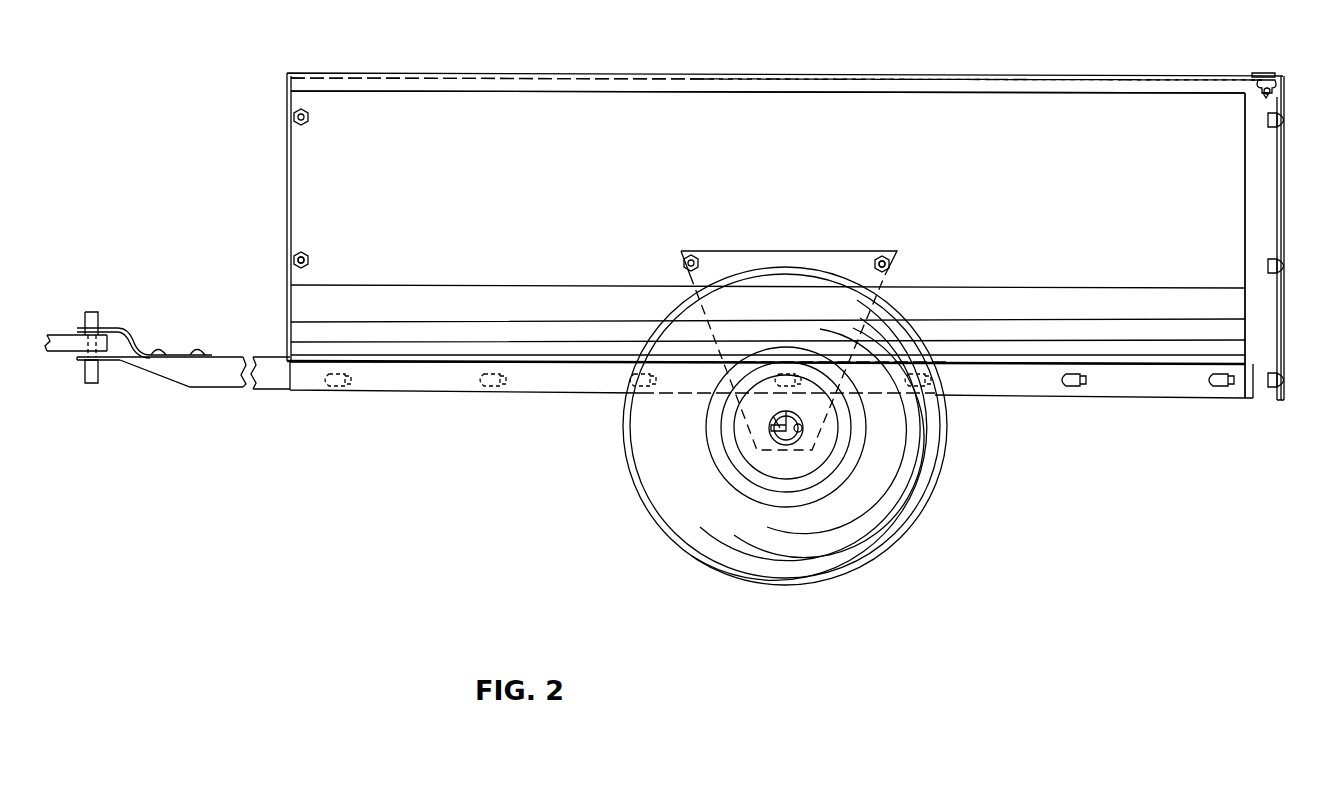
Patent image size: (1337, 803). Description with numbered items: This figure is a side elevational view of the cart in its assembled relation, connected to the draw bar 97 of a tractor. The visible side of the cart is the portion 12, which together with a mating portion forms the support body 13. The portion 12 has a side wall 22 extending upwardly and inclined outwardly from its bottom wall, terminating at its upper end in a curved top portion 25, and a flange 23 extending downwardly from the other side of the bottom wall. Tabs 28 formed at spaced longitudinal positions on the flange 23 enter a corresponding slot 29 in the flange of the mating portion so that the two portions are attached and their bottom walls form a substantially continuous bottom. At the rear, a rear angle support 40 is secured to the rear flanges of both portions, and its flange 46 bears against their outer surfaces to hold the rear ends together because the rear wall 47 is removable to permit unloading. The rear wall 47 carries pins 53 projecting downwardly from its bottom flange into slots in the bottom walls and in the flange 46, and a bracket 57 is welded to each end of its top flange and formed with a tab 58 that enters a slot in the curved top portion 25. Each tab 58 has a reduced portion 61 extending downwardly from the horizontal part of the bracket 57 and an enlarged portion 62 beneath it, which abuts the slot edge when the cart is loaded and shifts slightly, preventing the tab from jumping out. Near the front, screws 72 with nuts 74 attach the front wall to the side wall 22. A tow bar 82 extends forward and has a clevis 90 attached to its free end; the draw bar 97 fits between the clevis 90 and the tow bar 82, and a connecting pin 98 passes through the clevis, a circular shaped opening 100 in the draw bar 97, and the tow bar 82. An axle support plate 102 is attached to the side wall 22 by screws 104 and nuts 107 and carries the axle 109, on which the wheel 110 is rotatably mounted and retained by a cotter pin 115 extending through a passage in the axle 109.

The portion 12 is at (356, 74).
The support body 13 is at (900, 75).
The side wall 22 is at (1100, 216).
The flange 23 is at (1000, 398).
The curved top portion 25 is at (1150, 95).
The tabs 28 is at (1080, 390).
The slot 29 is at (1088, 381).
The rear angle support 40 is at (1236, 251).
The flange 46 is at (1246, 207).
The rear wall 47 is at (1293, 232).
The pins 53 is at (1258, 398).
The bracket 57 is at (1268, 72).
The tab 58 is at (1282, 93).
The reduced portion 61 is at (1282, 78).
The enlarged portion 62 is at (1265, 95).
The screws 72 is at (308, 264).
The nuts 74 is at (308, 257).
The tow bar 82 is at (241, 348).
The clevis 90 is at (130, 332).
The draw bar 97 is at (70, 334).
The connecting pin 98 is at (97, 320).
The circular shaped opening 100 is at (87, 370).
The axle support plate 102 is at (897, 272).
The screws 104 is at (893, 262).
The nuts 107 is at (880, 256).
The axle 109 is at (797, 412).
The wheel 110 is at (912, 518).
The cotter pin 115 is at (768, 440).